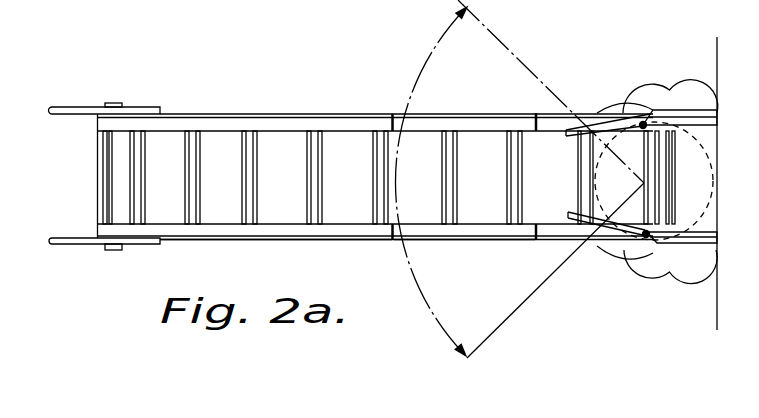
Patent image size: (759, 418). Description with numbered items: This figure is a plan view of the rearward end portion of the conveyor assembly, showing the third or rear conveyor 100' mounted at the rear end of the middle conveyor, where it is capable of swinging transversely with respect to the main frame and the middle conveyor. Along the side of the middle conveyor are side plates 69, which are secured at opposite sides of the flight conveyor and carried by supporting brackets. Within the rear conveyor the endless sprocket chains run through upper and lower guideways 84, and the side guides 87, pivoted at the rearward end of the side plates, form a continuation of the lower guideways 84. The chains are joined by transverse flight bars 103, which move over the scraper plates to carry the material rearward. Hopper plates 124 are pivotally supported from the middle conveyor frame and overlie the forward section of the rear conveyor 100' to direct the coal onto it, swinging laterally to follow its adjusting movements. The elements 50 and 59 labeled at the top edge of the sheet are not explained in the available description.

The rear conveyor 100' is at (351, 166).
The transverse flight bars 103 is at (315, 210).
The side plates 69 is at (215, 234).
The side guides 87 is at (450, 232).
The guideways 84 is at (567, 120).
The hopper plates 124 is at (597, 227).
The frame member 50 is at (658, 8).
The support post 59 is at (718, 8).